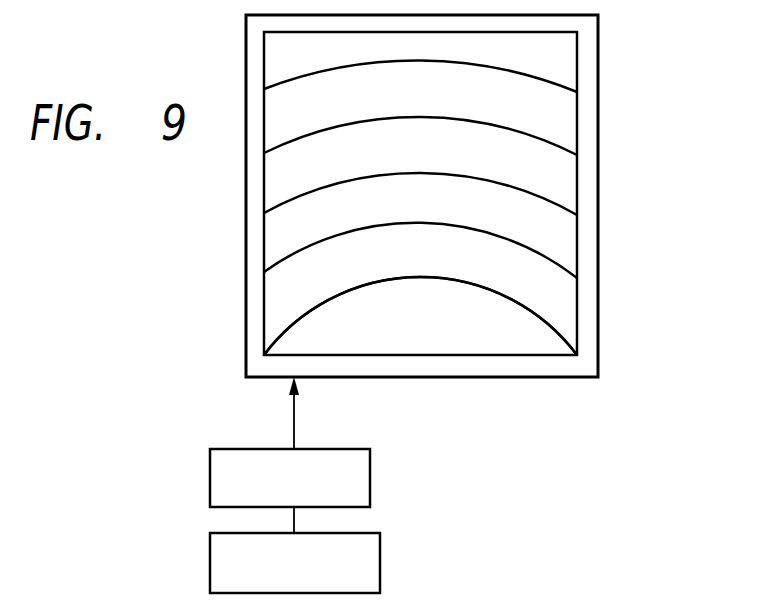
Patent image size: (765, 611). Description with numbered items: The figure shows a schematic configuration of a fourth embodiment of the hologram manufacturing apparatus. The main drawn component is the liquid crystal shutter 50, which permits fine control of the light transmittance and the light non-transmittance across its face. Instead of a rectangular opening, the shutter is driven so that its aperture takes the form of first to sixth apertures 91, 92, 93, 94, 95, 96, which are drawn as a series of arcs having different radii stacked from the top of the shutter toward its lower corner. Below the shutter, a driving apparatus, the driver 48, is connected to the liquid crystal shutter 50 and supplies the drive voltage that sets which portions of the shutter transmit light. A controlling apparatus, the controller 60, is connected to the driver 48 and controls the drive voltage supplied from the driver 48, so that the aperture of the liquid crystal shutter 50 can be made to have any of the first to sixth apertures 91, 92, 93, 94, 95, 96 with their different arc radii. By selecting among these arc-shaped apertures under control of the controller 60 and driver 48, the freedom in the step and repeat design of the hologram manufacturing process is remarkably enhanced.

The liquid crystal shutter 50 is at (568, 368).
The first aperture 91 is at (558, 62).
The second aperture 92 is at (560, 125).
The third aperture 93 is at (560, 186).
The fourth aperture 94 is at (563, 244).
The fifth aperture 95 is at (558, 300).
The sixth aperture 96 is at (545, 347).
The driver 48 is at (370, 468).
The controller 60 is at (380, 562).